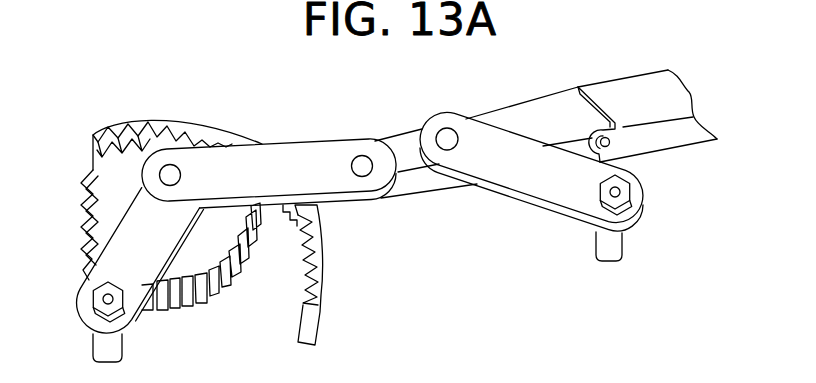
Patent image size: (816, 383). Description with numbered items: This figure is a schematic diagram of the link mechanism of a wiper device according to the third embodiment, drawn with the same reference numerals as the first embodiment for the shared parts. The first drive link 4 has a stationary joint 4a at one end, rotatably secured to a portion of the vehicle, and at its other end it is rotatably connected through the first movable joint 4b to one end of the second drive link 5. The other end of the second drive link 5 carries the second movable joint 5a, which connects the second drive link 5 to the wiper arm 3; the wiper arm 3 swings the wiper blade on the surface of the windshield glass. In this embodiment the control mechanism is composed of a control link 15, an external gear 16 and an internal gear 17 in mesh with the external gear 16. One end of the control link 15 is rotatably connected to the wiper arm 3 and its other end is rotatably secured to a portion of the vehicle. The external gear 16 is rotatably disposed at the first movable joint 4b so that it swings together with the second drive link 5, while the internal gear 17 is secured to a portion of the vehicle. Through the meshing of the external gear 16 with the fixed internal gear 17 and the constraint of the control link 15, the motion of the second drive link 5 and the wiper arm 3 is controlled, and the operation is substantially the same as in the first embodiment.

The wiper arm 3 is at (517, 127).
The first drive link 4 is at (118, 265).
The stationary joint 4a is at (91, 307).
The first movable joint 4b is at (169, 175).
The second drive link 5 is at (289, 157).
The second movable joint 5a is at (360, 164).
The control link 15 is at (518, 182).
The external gear 16 is at (203, 257).
The internal gear 17 is at (320, 283).